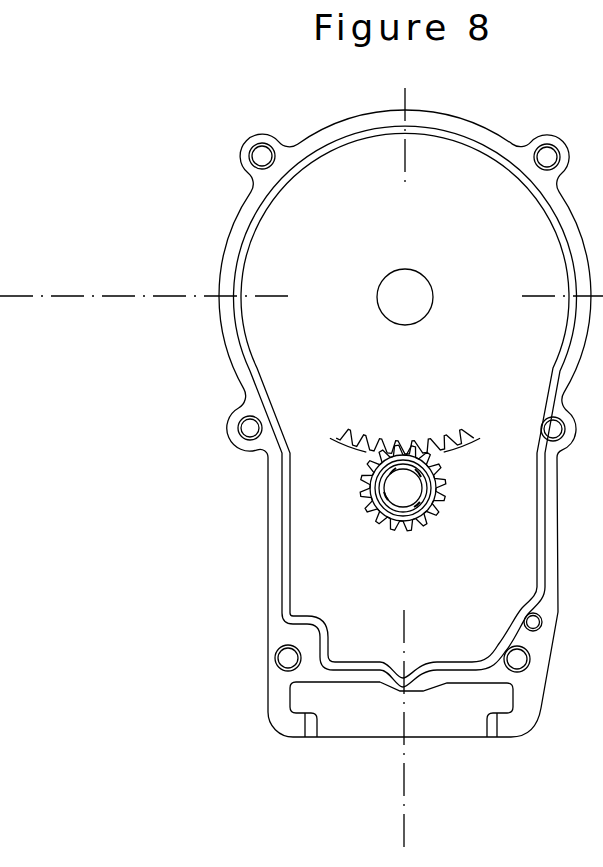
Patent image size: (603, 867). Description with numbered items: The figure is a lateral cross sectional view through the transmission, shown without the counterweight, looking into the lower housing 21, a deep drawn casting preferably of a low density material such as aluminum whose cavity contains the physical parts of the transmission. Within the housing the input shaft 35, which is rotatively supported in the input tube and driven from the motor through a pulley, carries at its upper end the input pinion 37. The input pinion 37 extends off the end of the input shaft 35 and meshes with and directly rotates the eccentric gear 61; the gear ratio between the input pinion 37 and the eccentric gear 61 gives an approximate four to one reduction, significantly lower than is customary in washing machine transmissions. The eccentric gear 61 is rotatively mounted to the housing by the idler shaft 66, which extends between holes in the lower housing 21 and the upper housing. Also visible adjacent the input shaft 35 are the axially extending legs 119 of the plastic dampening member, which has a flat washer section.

The lower housing 21 is at (552, 496).
The input shaft 35 is at (416, 499).
The input pinion 37 is at (447, 473).
The eccentric gear 61 is at (418, 224).
The idler shaft 66 is at (418, 309).
The axially extending legs 119 is at (385, 489).